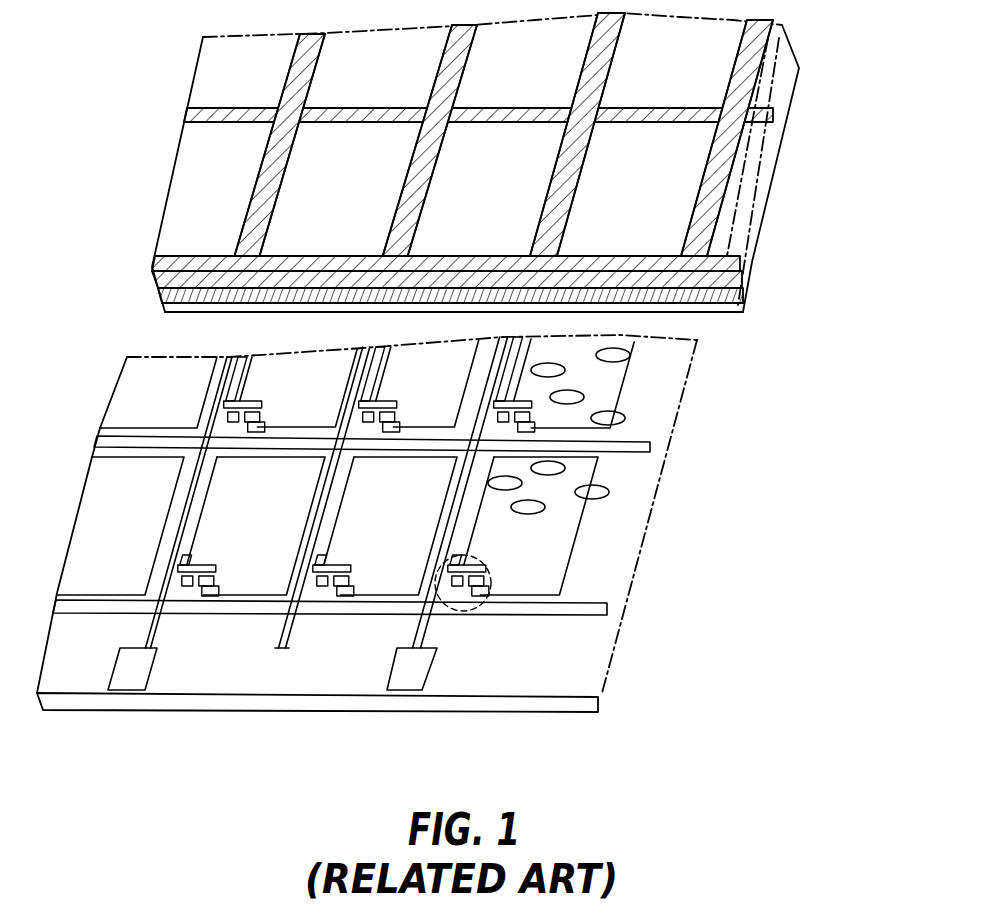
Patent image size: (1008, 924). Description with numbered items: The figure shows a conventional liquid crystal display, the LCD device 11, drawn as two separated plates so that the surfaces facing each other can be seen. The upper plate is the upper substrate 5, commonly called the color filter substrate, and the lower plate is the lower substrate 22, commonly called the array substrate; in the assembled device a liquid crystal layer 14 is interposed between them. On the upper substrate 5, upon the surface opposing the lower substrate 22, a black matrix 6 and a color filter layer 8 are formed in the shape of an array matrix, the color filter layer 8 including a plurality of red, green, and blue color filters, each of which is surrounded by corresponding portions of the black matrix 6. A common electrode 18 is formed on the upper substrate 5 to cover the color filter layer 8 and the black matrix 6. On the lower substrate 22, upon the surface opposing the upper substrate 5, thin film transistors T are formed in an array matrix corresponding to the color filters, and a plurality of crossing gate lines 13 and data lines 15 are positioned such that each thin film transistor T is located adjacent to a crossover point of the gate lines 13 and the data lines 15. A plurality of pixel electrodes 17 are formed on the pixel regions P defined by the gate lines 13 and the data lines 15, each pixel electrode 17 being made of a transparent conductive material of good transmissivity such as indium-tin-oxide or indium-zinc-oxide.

The upper substrate 5 is at (727, 270).
The black matrix 6 is at (773, 118).
The color filter layer 8 is at (713, 73).
The common electrode 18 is at (723, 305).
The LCD device 11 is at (768, 560).
The gate lines 13 is at (573, 610).
The liquid crystal layer 14 is at (603, 412).
The data lines 15 is at (410, 637).
The pixel electrodes 17 is at (567, 570).
The lower substrate 22 is at (560, 703).
The pixel region P is at (613, 527).
The thin film transistor T is at (483, 607).